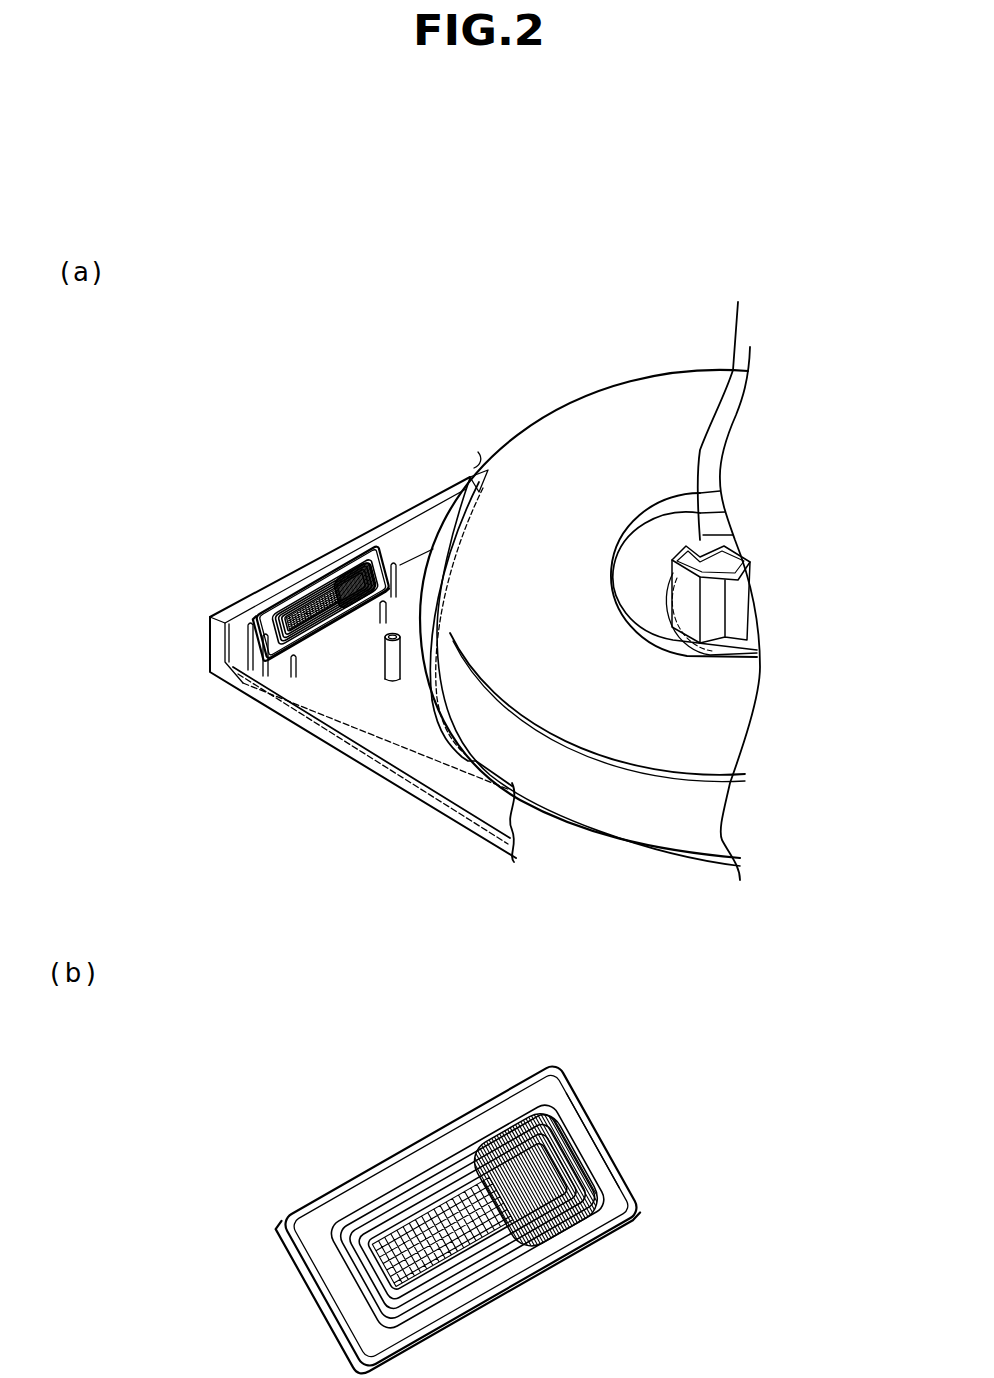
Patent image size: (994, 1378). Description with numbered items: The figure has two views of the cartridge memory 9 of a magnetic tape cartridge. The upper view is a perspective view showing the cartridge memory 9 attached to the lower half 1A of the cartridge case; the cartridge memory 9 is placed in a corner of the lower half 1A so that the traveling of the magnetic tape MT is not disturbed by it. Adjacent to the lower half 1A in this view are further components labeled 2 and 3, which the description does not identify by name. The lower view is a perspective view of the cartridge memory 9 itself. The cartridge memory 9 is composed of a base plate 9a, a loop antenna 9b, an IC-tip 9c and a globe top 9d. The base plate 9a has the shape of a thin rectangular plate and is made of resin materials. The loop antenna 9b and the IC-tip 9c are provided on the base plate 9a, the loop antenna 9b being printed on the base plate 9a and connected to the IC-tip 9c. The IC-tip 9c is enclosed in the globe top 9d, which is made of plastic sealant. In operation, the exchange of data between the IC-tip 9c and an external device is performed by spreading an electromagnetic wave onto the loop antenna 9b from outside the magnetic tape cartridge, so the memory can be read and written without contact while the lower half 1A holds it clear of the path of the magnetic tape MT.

In FIG. 2A, the lower half 1A is at (424, 484).
In FIG. 2A, the disc 2 is at (617, 385).
In FIG. 2A, the spindle motor hub 3 is at (685, 577).
In FIG. 2A, the magnetic tape MT is at (590, 793).
In FIG. 2A, the cartridge memory 9 is at (325, 570).
In FIG. 2B, the cartridge memory 9 is at (538, 1054).
In FIG. 2B, the base plate 9a is at (330, 1214).
In FIG. 2B, the loop antenna 9b is at (432, 1170).
In FIG. 2B, the IC-tip 9c is at (592, 1162).
In FIG. 2B, the globe top 9d is at (611, 1190).